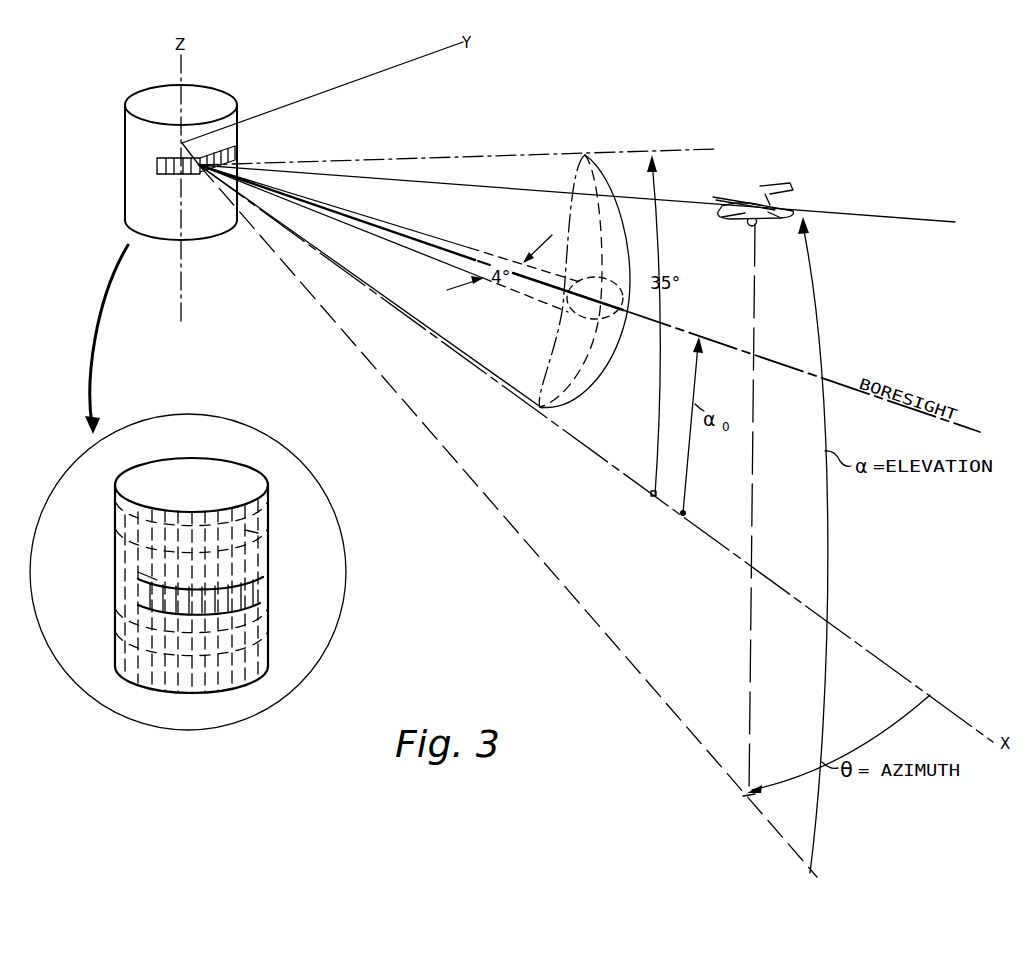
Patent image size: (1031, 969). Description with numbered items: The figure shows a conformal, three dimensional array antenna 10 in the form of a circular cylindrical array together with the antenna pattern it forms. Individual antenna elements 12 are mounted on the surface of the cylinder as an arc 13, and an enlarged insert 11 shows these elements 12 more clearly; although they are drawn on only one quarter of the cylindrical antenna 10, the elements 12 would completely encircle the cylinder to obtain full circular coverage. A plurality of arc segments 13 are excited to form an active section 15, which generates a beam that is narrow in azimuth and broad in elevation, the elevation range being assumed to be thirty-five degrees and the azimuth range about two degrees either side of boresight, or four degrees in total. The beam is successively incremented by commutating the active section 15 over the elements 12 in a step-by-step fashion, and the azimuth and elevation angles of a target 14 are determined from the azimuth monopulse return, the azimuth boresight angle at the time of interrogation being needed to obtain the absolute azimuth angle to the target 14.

The conformal array antenna 10 is at (155, 94).
The enlarged insert 11 is at (343, 598).
The antenna elements 12 is at (168, 175).
The arc 13 is at (138, 572).
The target 14 is at (780, 190).
The active section 15 is at (258, 533).